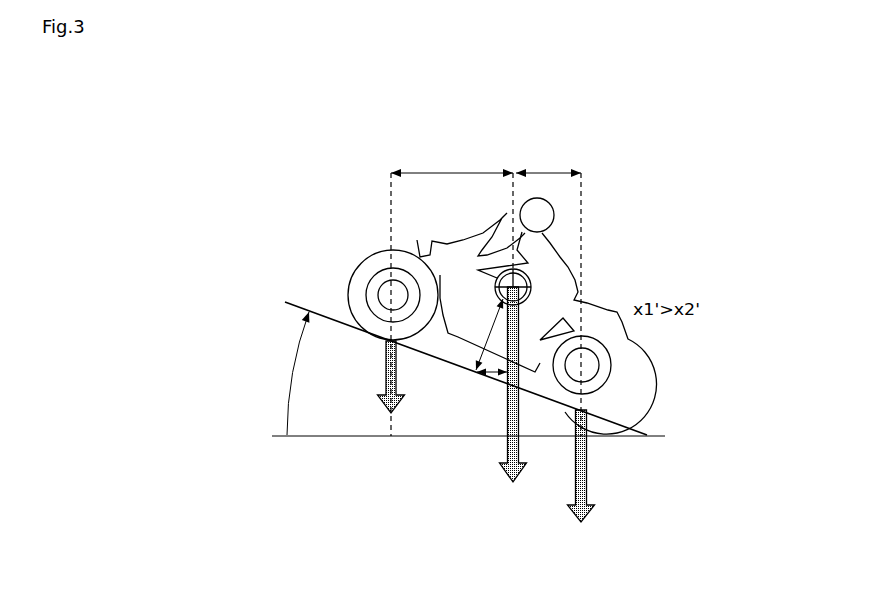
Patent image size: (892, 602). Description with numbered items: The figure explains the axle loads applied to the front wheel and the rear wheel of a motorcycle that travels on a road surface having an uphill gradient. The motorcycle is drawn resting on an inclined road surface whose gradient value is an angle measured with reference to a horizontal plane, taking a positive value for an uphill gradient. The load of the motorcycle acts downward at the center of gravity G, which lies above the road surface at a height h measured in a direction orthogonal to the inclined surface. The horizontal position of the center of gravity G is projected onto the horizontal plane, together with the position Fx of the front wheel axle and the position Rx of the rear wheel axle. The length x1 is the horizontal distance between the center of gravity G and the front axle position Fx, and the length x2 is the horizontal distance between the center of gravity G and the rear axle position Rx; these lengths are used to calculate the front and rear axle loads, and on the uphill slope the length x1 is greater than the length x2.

The center of gravity G is at (497, 289).
The height h is at (480, 392).
The length x1 is at (452, 165).
The length x2 is at (548, 165).
The position Fx is at (385, 354).
The position Rx is at (585, 439).